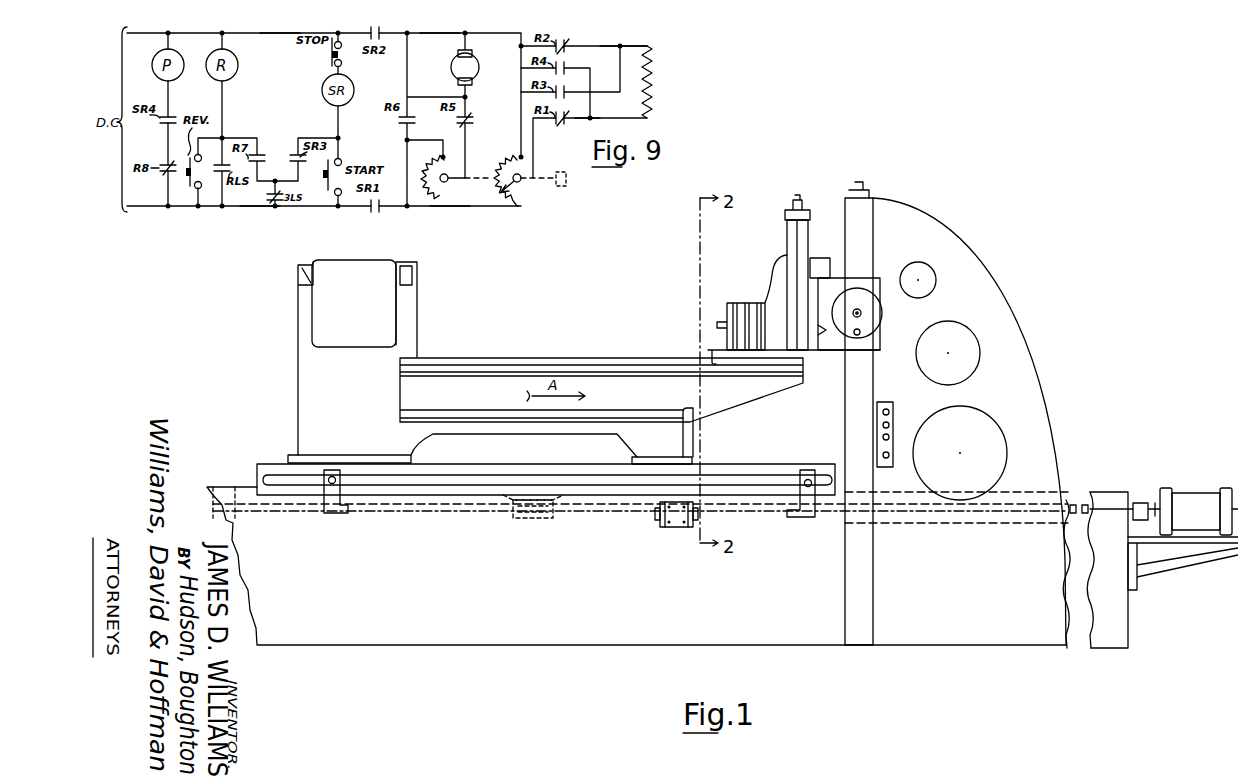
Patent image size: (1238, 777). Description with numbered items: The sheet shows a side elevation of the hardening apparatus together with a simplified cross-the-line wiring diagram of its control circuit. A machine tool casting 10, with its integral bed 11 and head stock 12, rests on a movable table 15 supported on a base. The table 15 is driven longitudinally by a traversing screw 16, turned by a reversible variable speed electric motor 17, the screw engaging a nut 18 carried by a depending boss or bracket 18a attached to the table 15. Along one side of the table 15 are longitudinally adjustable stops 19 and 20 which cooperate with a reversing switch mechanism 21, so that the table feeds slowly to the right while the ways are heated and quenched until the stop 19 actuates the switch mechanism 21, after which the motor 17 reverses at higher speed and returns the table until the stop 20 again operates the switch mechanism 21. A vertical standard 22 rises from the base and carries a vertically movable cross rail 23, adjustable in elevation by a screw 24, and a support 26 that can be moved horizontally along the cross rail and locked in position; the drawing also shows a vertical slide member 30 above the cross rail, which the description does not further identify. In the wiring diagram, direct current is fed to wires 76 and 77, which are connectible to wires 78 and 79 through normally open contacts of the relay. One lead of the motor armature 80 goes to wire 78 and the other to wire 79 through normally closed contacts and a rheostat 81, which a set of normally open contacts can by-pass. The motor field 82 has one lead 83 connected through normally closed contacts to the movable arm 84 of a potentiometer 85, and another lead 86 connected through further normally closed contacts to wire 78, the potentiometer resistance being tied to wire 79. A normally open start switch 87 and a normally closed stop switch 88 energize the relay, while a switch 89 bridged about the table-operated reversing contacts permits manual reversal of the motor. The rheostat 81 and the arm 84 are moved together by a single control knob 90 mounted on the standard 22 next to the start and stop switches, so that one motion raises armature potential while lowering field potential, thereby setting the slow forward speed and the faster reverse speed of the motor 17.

In FIG. 1, the machine tool casting 10 is at (470, 320).
In FIG. 1, the bed 11 is at (568, 430).
In FIG. 1, the head stock 12 is at (298, 333).
In FIG. 1, the movable table 15 is at (792, 470).
In FIG. 1, the traversing screw 16 is at (613, 512).
In FIG. 1, the electric motor 17 is at (1196, 495).
In FIG. 1, the nut 18 is at (517, 519).
In FIG. 1, the depending boss or bracket 18a is at (553, 519).
In FIG. 1, the adjustable stop 19 is at (346, 512).
In FIG. 1, the adjustable stop 20 is at (810, 517).
In FIG. 1, the reversing switch mechanism 21 is at (676, 528).
In FIG. 1, the vertical standard 22 is at (978, 300).
In FIG. 1, the cross rail 23 is at (876, 278).
In FIG. 1, the screw 24 is at (868, 190).
In FIG. 1, the support 26 is at (776, 265).
In FIG. 1, the vertical slide 30 is at (797, 199).
In FIG. 9, the wire 76 is at (282, 34).
In FIG. 9, the wire 77 is at (262, 207).
In FIG. 9, the wire 78 is at (441, 34).
In FIG. 9, the wire 79 is at (446, 207).
In FIG. 9, the armature 80 is at (479, 66).
In FIG. 9, the potential varying device (rheostat) 81 is at (441, 156).
In FIG. 9, the field 82 is at (651, 100).
In FIG. 9, the lead 83 is at (594, 118).
In FIG. 9, the movable arm 84 is at (515, 187).
In FIG. 9, the potentiometer 85 is at (514, 156).
In FIG. 9, the lead 86 is at (629, 44).
In FIG. 9, the start switch 87 is at (326, 191).
In FIG. 1, the start switch 87 is at (889, 412).
In FIG. 9, the stop switch 88 is at (331, 56).
In FIG. 1, the stop switch 88 is at (889, 425).
In FIG. 9, the switch 89 is at (184, 189).
In FIG. 1, the switch 89 is at (889, 437).
In FIG. 9, the control knob 90 is at (560, 188).
In FIG. 1, the control knob 90 is at (886, 458).